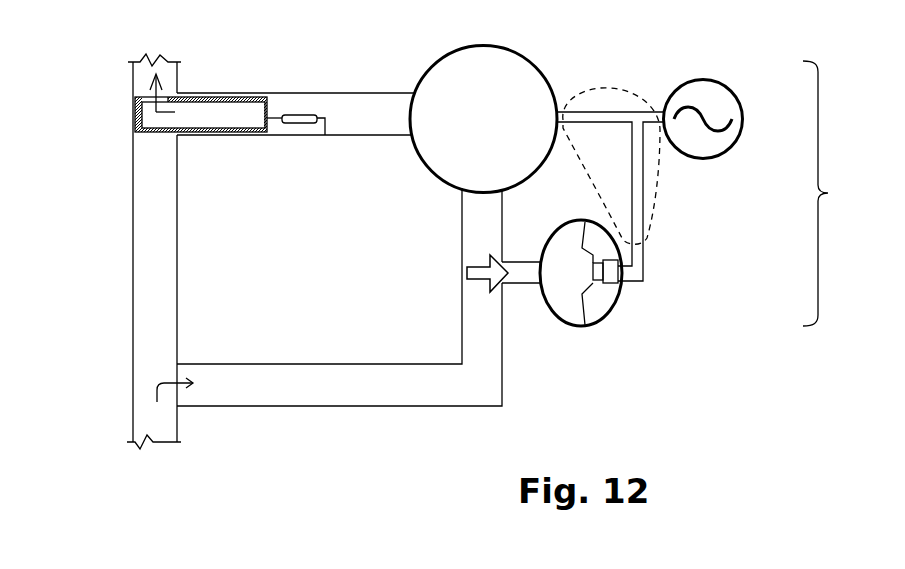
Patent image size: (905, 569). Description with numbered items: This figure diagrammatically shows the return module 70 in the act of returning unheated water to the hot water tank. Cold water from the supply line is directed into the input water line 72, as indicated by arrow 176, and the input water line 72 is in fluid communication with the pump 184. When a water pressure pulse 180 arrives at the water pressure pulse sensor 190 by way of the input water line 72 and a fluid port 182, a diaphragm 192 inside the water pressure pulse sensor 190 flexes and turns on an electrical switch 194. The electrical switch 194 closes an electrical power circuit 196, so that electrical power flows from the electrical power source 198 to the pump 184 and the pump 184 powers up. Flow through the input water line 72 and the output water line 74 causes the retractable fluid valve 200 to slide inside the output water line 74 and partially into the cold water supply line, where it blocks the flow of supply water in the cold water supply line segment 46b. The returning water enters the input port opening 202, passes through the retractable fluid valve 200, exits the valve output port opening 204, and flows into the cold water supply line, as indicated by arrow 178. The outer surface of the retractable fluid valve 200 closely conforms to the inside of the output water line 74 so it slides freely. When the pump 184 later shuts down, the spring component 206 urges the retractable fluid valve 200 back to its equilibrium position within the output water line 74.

The cold water supply line segment 46b is at (133, 233).
The return module 70 is at (834, 193).
The input water line 72 is at (327, 406).
The output water line 74 is at (385, 137).
The arrow 176 is at (155, 383).
The arrow 178 is at (156, 112).
The water pressure pulse 180 is at (478, 281).
The fluid port 182 is at (520, 284).
The pump 184 is at (519, 56).
The water pressure pulse sensor 190 is at (596, 322).
The diaphragm 192 is at (612, 310).
The electrical switch 194 is at (618, 290).
The electrical power circuit 196 is at (598, 92).
The electrical power source 198 is at (703, 80).
The retractable fluid valve 200 is at (157, 133).
The input port opening 202 is at (269, 108).
The valve output port opening 204 is at (146, 94).
The spring component 206 is at (300, 113).